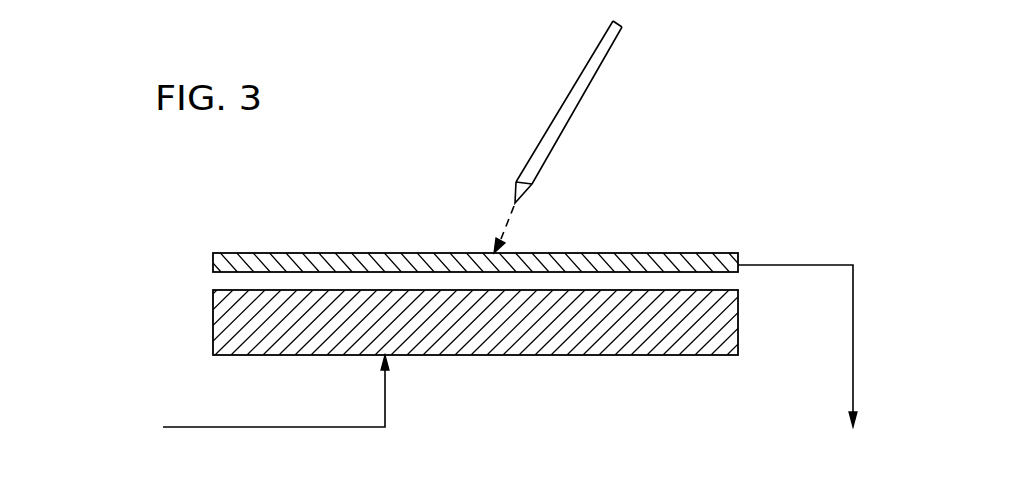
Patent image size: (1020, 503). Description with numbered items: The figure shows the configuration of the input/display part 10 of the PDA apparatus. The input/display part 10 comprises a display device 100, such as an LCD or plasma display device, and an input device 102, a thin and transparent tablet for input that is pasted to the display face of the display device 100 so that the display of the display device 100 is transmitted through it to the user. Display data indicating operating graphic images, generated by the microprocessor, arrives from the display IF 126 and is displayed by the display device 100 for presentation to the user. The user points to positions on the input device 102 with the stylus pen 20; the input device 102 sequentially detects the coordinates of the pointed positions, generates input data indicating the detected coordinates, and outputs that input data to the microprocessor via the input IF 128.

The input/display part 10 is at (479, 332).
The stylus pen 20 is at (597, 38).
The display device 100 is at (572, 356).
The input device 102 is at (593, 252).
The display IF 126 is at (204, 406).
The input IF 128 is at (825, 362).